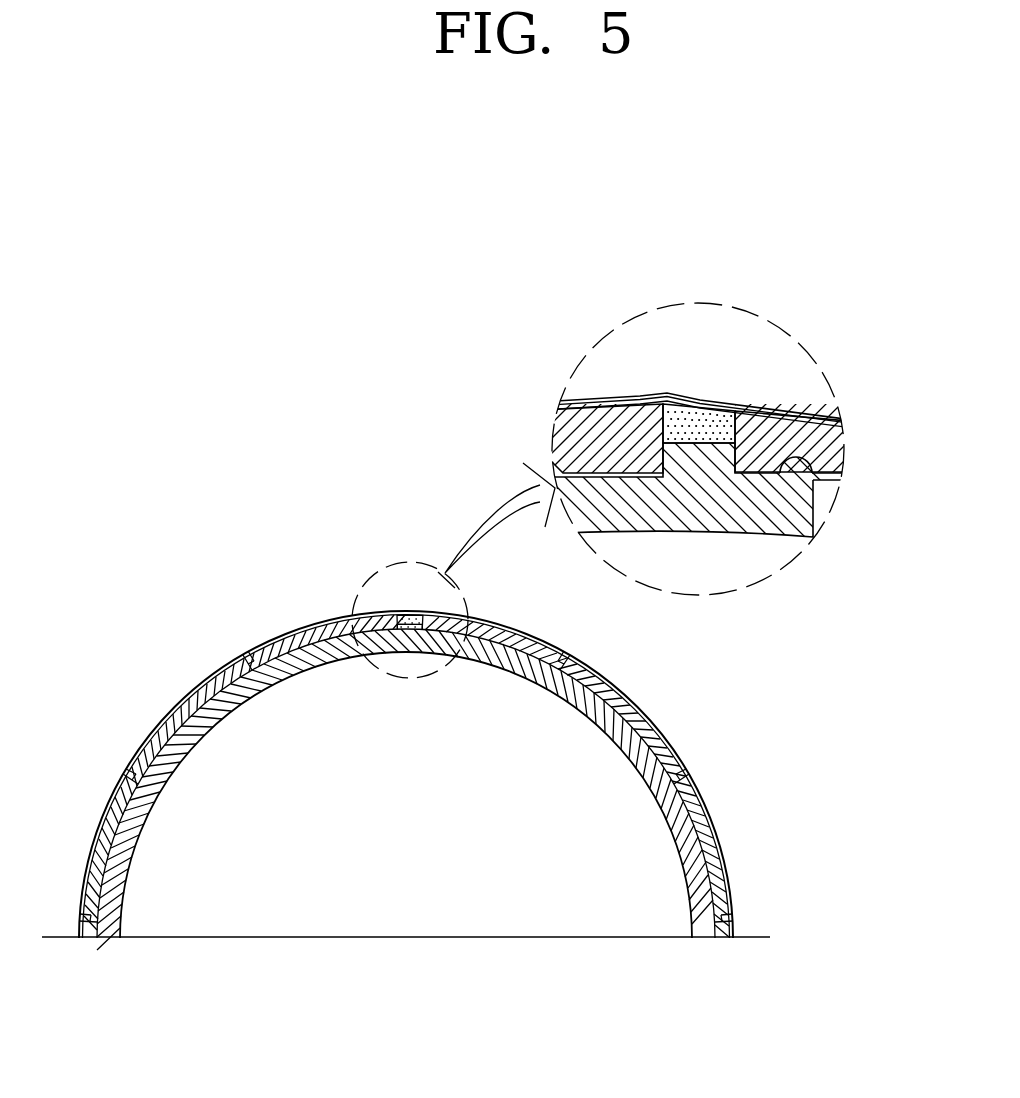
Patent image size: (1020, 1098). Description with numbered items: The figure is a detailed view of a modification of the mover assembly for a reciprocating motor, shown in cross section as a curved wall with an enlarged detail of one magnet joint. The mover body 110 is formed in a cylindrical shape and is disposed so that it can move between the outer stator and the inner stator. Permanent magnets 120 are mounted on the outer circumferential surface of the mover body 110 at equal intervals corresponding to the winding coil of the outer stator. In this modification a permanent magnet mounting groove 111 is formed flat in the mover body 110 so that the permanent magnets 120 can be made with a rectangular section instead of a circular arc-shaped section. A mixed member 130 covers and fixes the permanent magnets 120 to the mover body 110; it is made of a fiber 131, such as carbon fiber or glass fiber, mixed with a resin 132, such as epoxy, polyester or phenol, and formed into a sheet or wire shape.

The mover body 110 is at (308, 640).
The permanent magnet mounting groove 111 is at (810, 535).
The permanent magnet 120 is at (177, 718).
The mixed member 130 is at (248, 657).
The fiber 131 is at (677, 417).
The resin 132 is at (705, 430).